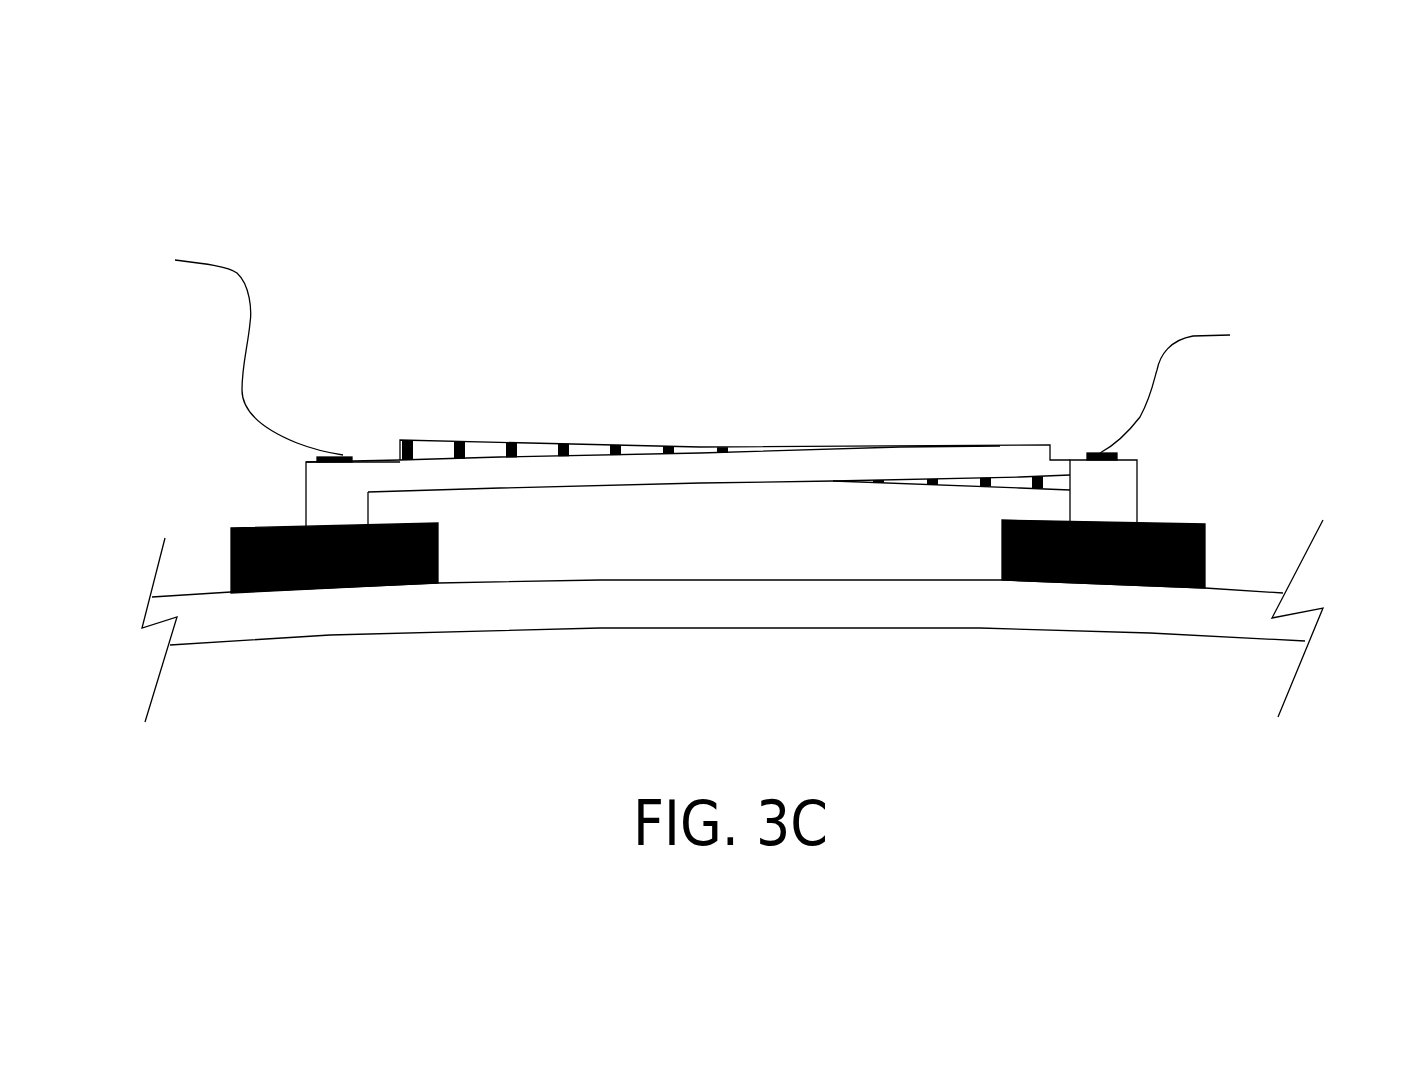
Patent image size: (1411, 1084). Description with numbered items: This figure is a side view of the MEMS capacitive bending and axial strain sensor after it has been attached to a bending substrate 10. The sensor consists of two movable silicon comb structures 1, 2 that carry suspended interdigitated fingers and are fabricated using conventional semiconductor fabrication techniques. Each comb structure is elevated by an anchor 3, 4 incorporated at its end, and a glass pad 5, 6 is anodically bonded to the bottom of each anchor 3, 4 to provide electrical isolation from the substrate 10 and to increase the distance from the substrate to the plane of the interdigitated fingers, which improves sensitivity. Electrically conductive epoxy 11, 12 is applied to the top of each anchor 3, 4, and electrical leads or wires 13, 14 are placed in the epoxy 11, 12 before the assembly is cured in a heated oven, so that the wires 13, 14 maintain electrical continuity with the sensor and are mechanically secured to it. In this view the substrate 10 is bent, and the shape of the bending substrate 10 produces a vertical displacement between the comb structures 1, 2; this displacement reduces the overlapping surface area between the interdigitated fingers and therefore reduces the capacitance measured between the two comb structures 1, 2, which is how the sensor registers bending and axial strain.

The movable silicon comb structure 1 is at (688, 377).
The movable silicon comb structure 2 is at (719, 519).
The anchor 3 is at (1190, 465).
The anchor 4 is at (264, 470).
The glass pad 5 is at (1198, 527).
The glass pad 6 is at (236, 525).
The bending substrate 10 is at (732, 652).
The electrically conductive epoxy 11 is at (376, 398).
The electrically conductive epoxy 12 is at (1043, 398).
The electrical lead or wire 13 is at (269, 305).
The electrical lead or wire 14 is at (1203, 321).